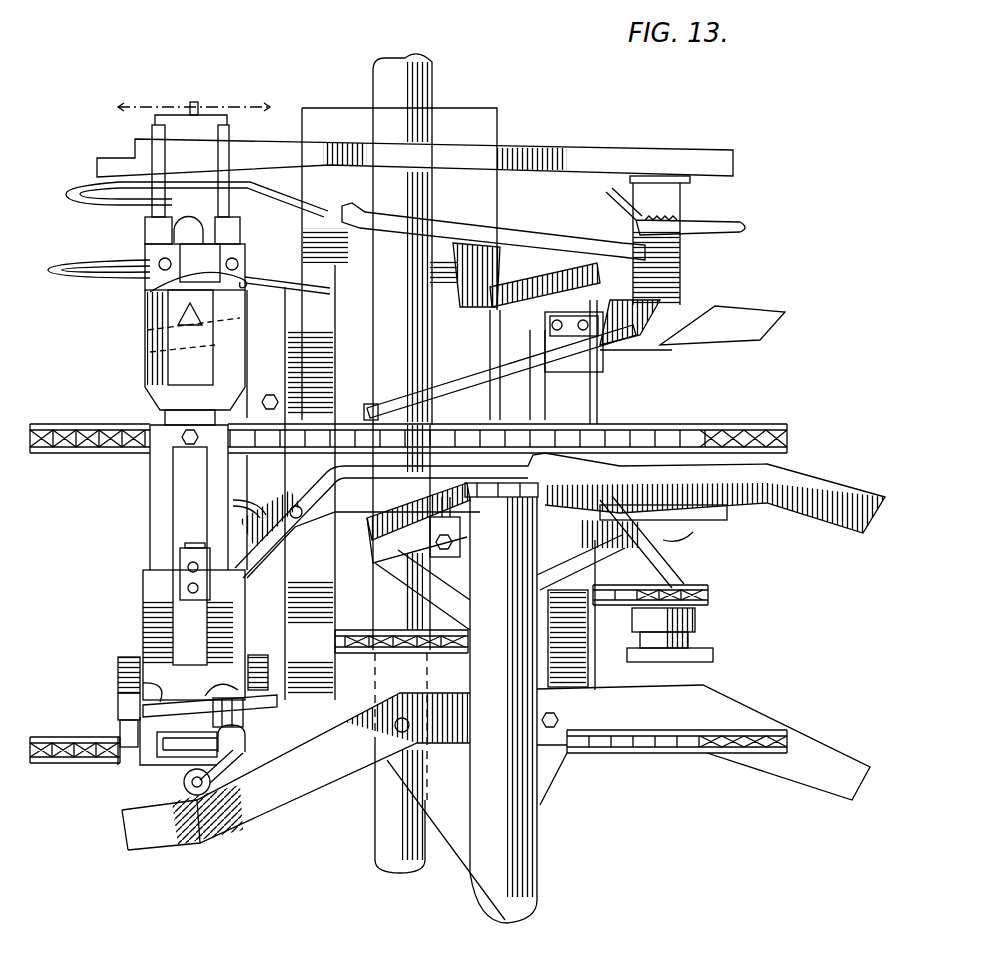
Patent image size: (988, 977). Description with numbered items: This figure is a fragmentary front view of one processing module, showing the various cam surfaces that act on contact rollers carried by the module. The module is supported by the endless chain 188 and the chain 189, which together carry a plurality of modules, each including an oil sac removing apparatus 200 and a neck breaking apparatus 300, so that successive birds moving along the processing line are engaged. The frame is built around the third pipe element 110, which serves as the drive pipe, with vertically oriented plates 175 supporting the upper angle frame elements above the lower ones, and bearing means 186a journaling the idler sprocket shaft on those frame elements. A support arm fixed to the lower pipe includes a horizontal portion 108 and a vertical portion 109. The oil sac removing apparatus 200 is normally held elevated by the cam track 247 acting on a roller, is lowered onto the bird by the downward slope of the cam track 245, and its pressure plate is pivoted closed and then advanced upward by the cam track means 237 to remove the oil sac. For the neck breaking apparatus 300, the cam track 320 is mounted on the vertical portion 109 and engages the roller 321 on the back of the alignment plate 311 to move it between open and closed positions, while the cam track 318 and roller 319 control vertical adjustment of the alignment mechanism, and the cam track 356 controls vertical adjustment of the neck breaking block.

The horizontal portion 108 is at (470, 862).
The vertical portion 109 is at (520, 887).
The third pipe element 110 is at (423, 78).
The vertically oriented plate 175 is at (323, 652).
The bearing means 186a is at (615, 610).
The endless chain 188 is at (100, 763).
The chain 189 is at (128, 453).
The oil sac removing apparatus 200 is at (130, 362).
The cam track means 237 is at (585, 380).
The cam track 245 is at (268, 270).
The cam track 247 is at (557, 233).
The neck breaking apparatus 300 is at (130, 602).
The alignment plate 311 is at (143, 684).
The cam track 318 is at (253, 770).
The roller 319 is at (175, 797).
The cam track 320 is at (372, 548).
The roller 321 is at (240, 715).
The cam track 356 is at (400, 504).